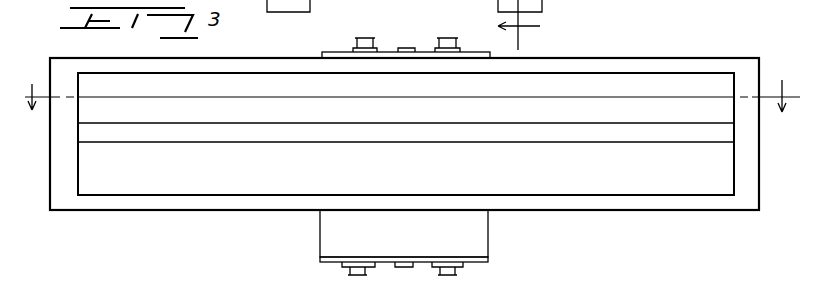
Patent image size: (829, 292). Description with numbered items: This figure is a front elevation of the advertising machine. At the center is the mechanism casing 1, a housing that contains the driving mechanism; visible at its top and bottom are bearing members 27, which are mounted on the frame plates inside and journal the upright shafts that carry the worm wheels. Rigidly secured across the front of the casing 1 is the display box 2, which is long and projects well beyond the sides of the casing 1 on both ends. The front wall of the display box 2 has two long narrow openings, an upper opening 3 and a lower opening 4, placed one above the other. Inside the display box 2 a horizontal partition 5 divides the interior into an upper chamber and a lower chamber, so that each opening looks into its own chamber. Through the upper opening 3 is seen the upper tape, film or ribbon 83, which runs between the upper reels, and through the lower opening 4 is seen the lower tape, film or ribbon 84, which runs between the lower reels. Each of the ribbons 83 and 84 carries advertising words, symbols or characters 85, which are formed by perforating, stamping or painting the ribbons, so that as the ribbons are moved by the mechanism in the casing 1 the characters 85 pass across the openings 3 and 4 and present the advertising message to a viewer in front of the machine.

The mechanism casing 1 is at (349, 235).
The display box 2 is at (686, 56).
The upper opening 3 is at (232, 78).
The lower opening 4 is at (191, 192).
The horizontal partition 5 is at (412, 105).
The bearing members 27 is at (446, 40).
The upper ribbon 83 is at (663, 80).
The lower ribbon 84 is at (677, 172).
The advertising characters 85 is at (207, 80).